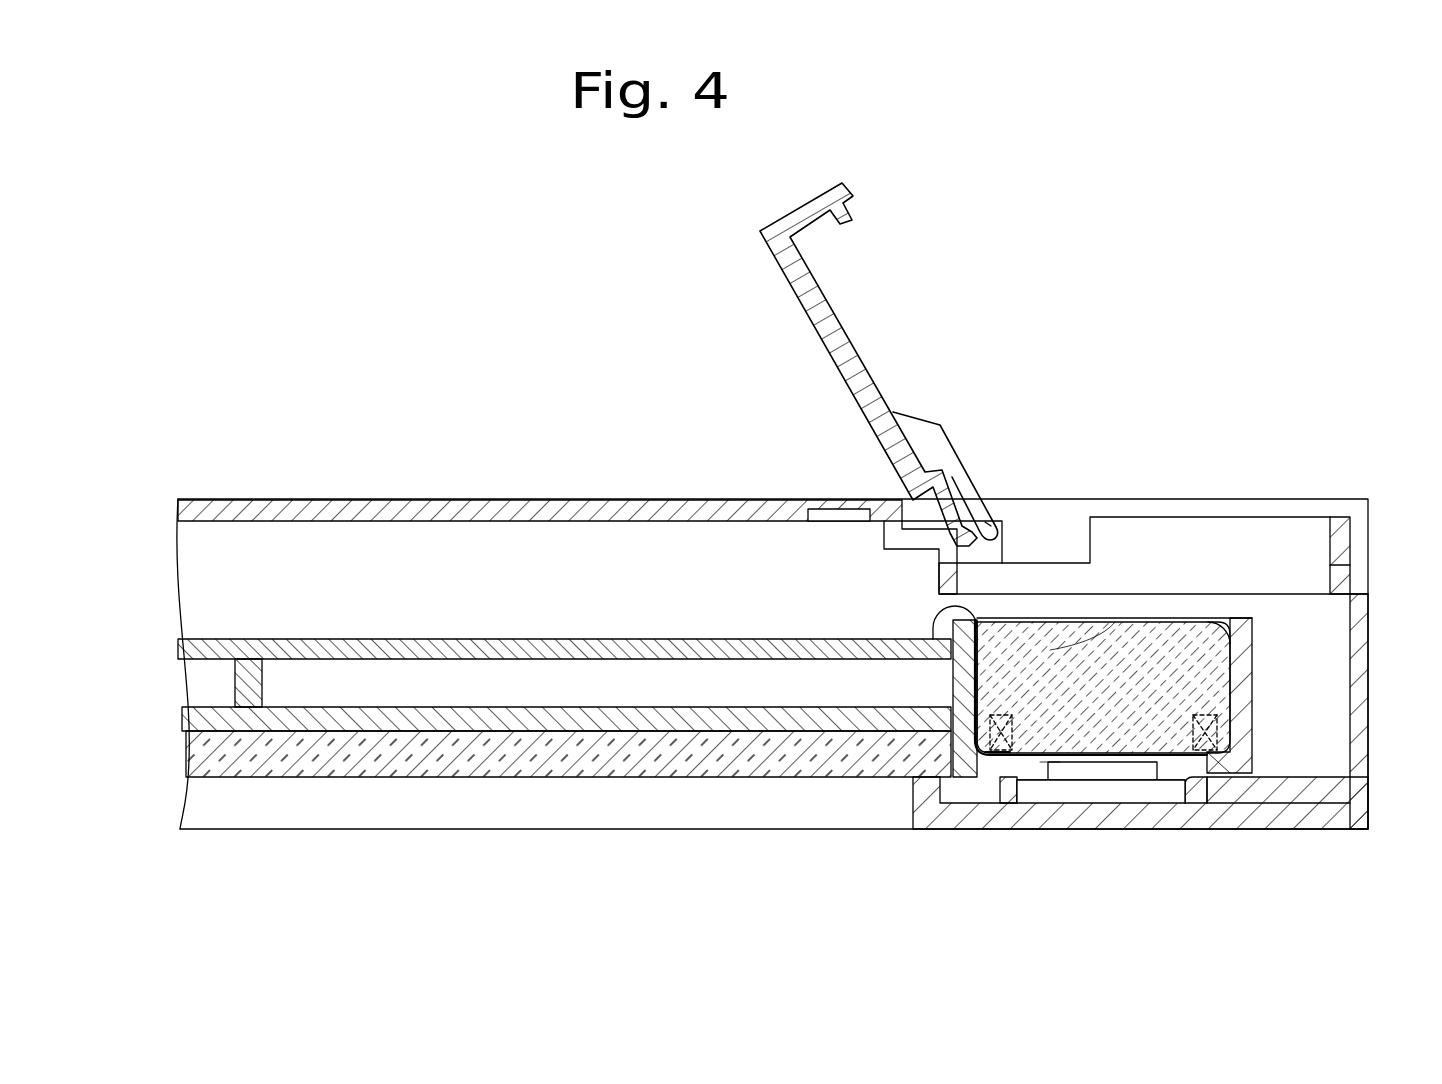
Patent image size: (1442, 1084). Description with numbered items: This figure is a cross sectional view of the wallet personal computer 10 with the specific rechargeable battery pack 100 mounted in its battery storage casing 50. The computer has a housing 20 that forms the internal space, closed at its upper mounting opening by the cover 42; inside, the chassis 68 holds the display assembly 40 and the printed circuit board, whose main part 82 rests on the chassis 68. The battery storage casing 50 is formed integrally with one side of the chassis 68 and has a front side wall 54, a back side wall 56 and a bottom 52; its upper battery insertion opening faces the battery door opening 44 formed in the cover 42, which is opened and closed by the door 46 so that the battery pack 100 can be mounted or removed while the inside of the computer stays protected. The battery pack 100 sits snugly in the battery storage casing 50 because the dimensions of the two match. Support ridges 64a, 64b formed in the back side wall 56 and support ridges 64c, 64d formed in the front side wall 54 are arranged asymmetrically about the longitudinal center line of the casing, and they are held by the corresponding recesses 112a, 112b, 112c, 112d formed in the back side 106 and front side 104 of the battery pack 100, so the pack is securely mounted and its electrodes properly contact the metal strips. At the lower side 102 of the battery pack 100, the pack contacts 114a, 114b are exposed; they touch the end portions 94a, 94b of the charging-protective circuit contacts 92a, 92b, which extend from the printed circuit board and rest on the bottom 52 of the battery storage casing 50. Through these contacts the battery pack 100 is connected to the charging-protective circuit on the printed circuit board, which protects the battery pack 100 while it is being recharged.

The wallet personal computer 10 is at (763, 548).
The housing 20 is at (1368, 738).
The display assembly 40 is at (195, 752).
The cover 42 is at (178, 509).
The battery door opening 44 is at (1161, 516).
The door 46 is at (822, 340).
The battery storage casing 50 is at (1243, 696).
The bottom 52 is at (1135, 766).
The front side wall 54 is at (1252, 622).
The back side wall 56 is at (960, 672).
The support ridge 64a is at (916, 801).
The support ridge 64b is at (995, 752).
The support ridge 64c is at (1257, 747).
The support ridge 64d is at (1225, 742).
The chassis 68 is at (190, 716).
The main part 82 is at (180, 649).
The charging-protective circuit contact 92a is at (887, 619).
The charging-protective circuit contact 92b is at (935, 617).
The end portion 94a is at (975, 832).
The end portion 94b is at (1005, 752).
The battery pack 100 is at (1153, 640).
The lower side 102 is at (1183, 790).
The front side 104 is at (1215, 625).
The back side 106 is at (1000, 752).
The recess 112a is at (1046, 818).
The recess 112b is at (1049, 762).
The recess 112c is at (1265, 808).
The recess 112d is at (1228, 745).
The pack contact 114a is at (1131, 588).
The pack contact 114b is at (1050, 650).